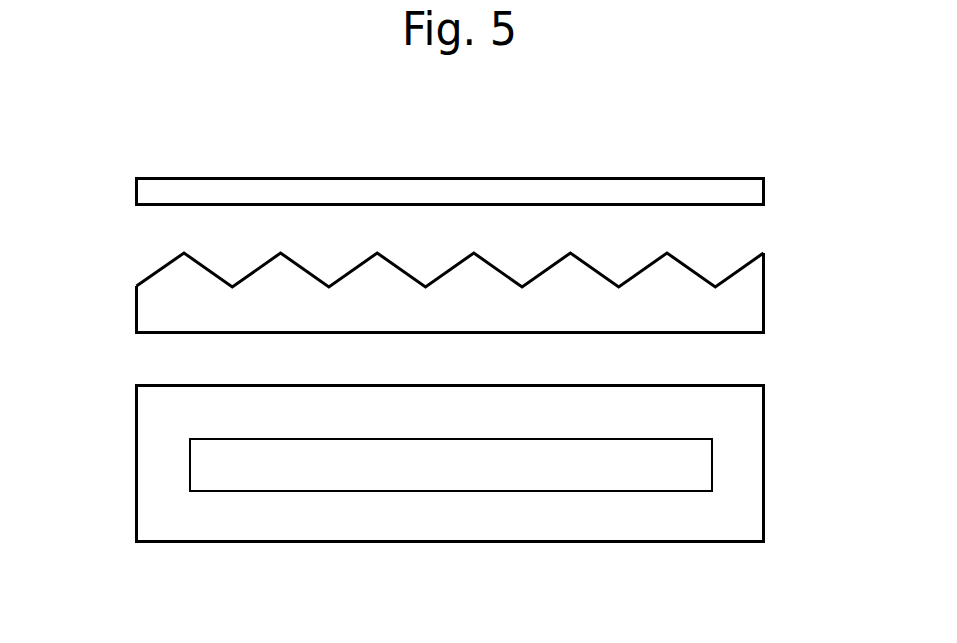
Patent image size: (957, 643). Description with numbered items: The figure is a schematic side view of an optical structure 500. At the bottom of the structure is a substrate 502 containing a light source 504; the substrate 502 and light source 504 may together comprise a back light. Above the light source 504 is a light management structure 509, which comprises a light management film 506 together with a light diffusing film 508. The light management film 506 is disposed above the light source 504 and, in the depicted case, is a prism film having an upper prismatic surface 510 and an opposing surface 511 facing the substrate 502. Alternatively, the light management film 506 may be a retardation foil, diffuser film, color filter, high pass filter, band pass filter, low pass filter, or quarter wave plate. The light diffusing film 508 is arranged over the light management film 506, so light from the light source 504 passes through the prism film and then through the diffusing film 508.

The optical structure 500 is at (663, 150).
The substrate 502 is at (753, 527).
The light source 504 is at (616, 476).
The light management film 506 is at (145, 322).
The light diffusing film 508 is at (145, 197).
The light management structure 509 is at (778, 176).
The upper prismatic surface 510 is at (735, 273).
The opposing surface 511 is at (738, 334).